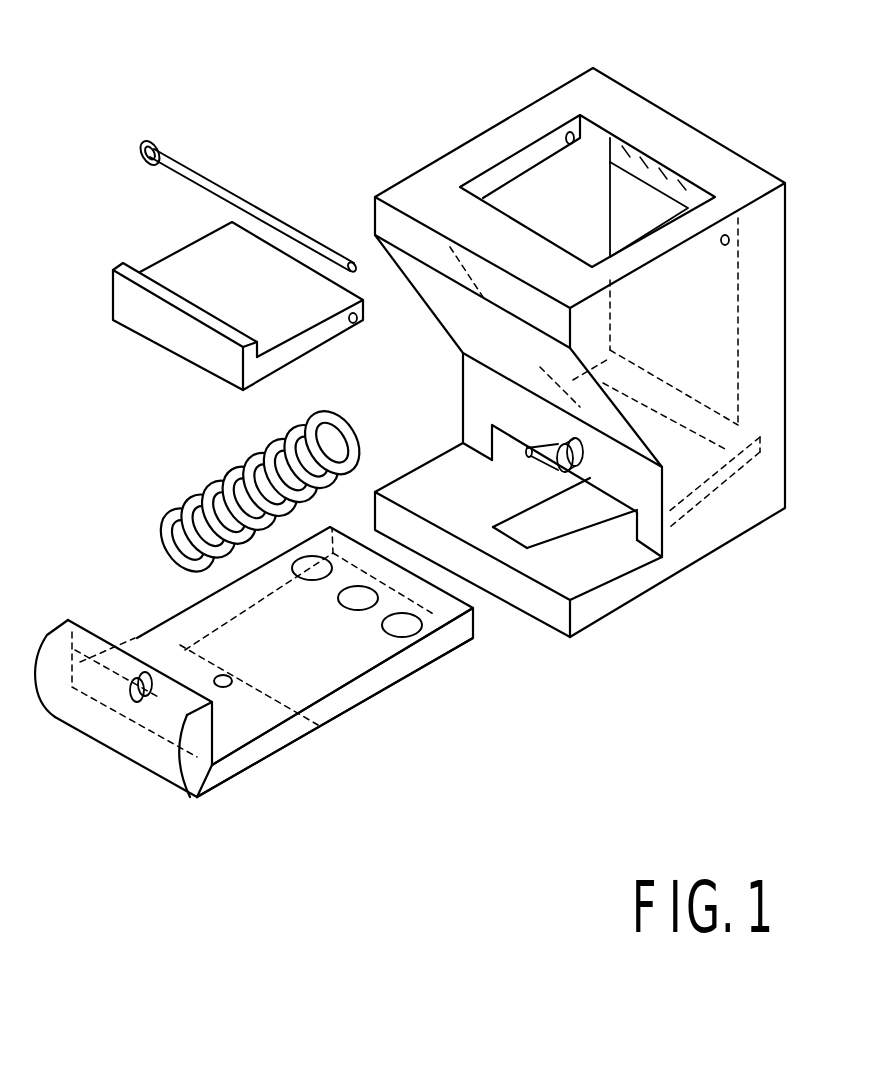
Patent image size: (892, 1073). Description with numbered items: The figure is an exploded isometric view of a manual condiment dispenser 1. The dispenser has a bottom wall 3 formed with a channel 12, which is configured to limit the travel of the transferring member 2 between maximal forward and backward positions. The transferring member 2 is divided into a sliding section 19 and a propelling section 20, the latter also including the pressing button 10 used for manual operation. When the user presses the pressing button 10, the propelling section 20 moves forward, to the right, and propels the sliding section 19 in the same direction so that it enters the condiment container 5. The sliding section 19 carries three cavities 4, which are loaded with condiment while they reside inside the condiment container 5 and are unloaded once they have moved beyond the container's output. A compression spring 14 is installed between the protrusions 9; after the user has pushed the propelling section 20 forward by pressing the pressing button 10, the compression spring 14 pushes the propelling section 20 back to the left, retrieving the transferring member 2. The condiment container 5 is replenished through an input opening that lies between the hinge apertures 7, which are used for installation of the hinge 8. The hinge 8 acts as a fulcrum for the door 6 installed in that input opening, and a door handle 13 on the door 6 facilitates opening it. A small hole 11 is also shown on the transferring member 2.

The condiment dispenser 1 is at (682, 150).
The transferring member 2 is at (340, 698).
The bottom wall 3 is at (580, 583).
The cavities 4 is at (382, 627).
The condiment container 5 is at (560, 190).
The door 6 is at (310, 352).
The hinge apertures 7 is at (572, 132).
The hinge 8 is at (210, 182).
The protrusions 9 is at (556, 448).
The pressing button 10 is at (150, 750).
The hole 11 is at (232, 683).
The channel 12 is at (553, 508).
The door handle 13 is at (215, 330).
The compression spring 14 is at (365, 428).
The sliding section 19 is at (348, 660).
The propelling section 20 is at (252, 725).